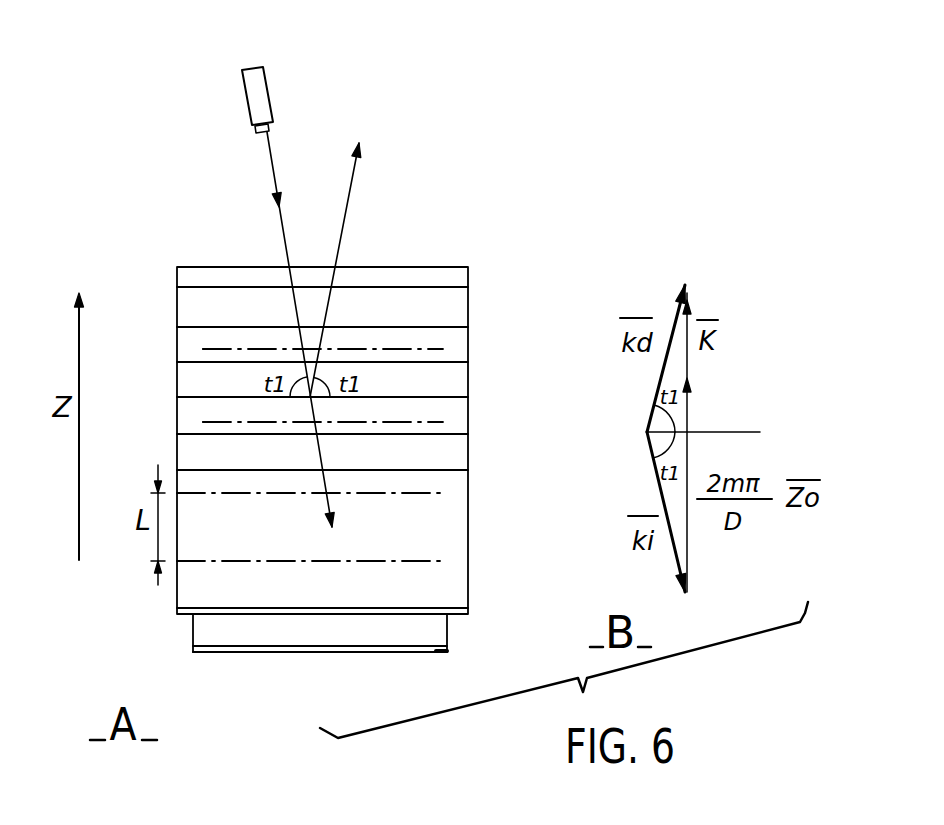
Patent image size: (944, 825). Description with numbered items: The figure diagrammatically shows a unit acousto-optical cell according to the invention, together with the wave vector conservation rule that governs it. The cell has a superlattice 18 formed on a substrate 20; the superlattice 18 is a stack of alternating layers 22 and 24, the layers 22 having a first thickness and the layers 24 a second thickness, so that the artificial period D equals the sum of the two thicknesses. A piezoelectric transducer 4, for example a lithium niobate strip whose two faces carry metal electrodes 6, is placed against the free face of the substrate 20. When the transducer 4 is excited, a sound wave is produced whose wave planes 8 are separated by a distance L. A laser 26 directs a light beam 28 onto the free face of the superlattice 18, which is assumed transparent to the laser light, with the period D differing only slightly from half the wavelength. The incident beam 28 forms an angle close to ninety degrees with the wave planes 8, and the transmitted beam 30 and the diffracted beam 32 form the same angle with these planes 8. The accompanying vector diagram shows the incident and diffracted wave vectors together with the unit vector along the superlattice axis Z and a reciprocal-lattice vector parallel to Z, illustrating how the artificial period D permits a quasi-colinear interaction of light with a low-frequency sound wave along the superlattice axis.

The piezoelectric transducer 4 is at (213, 632).
The metal electrodes 6 is at (456, 618).
The wave planes 8 is at (430, 422).
The superlattice 18 is at (476, 425).
The substrate 20 is at (470, 535).
The layers 22 is at (187, 378).
The layers 24 is at (222, 337).
The laser 26 is at (255, 93).
The light beam 28 is at (268, 175).
The transmitted beam 30 is at (322, 507).
The diffracted beam 32 is at (355, 188).